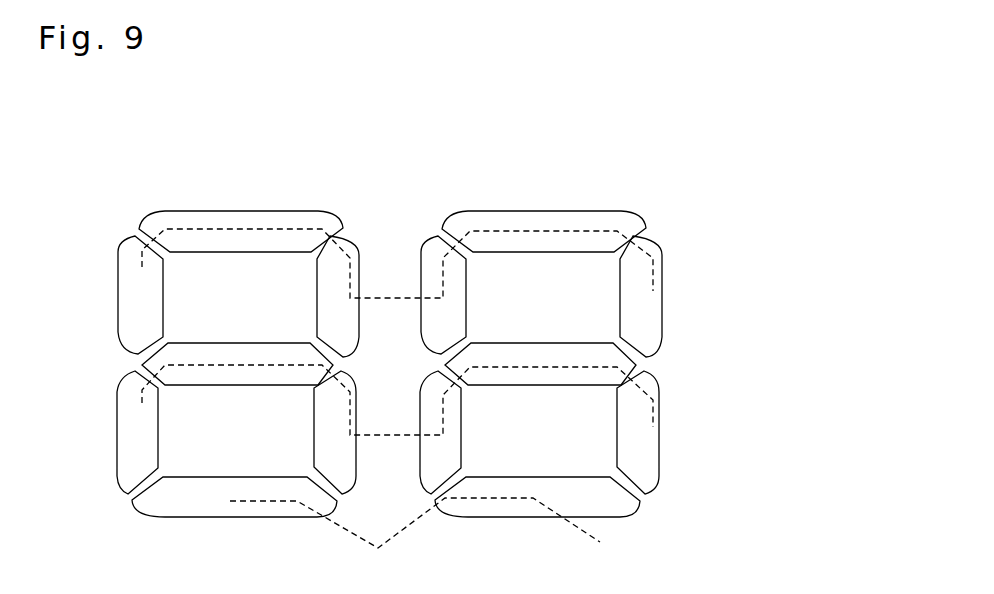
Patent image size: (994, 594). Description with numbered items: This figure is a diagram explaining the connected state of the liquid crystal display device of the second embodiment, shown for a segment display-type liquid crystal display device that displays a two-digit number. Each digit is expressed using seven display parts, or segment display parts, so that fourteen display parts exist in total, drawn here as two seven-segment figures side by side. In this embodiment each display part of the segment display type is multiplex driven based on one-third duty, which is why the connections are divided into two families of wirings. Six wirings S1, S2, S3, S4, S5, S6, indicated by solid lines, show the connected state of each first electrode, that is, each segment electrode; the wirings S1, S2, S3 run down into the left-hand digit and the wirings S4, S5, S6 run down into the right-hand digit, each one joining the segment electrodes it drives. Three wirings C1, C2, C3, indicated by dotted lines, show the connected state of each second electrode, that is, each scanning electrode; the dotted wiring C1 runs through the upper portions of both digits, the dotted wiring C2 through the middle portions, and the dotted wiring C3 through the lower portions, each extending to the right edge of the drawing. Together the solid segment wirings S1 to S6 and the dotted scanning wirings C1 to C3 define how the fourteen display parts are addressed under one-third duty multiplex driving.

The wiring S1 is at (116, 306).
The wiring S2 is at (241, 251).
The wiring S3 is at (247, 318).
The wiring S4 is at (419, 319).
The wiring S5 is at (544, 252).
The wiring S6 is at (551, 318).
The wiring C1 is at (477, 266).
The wiring C2 is at (477, 402).
The wiring C3 is at (521, 525).